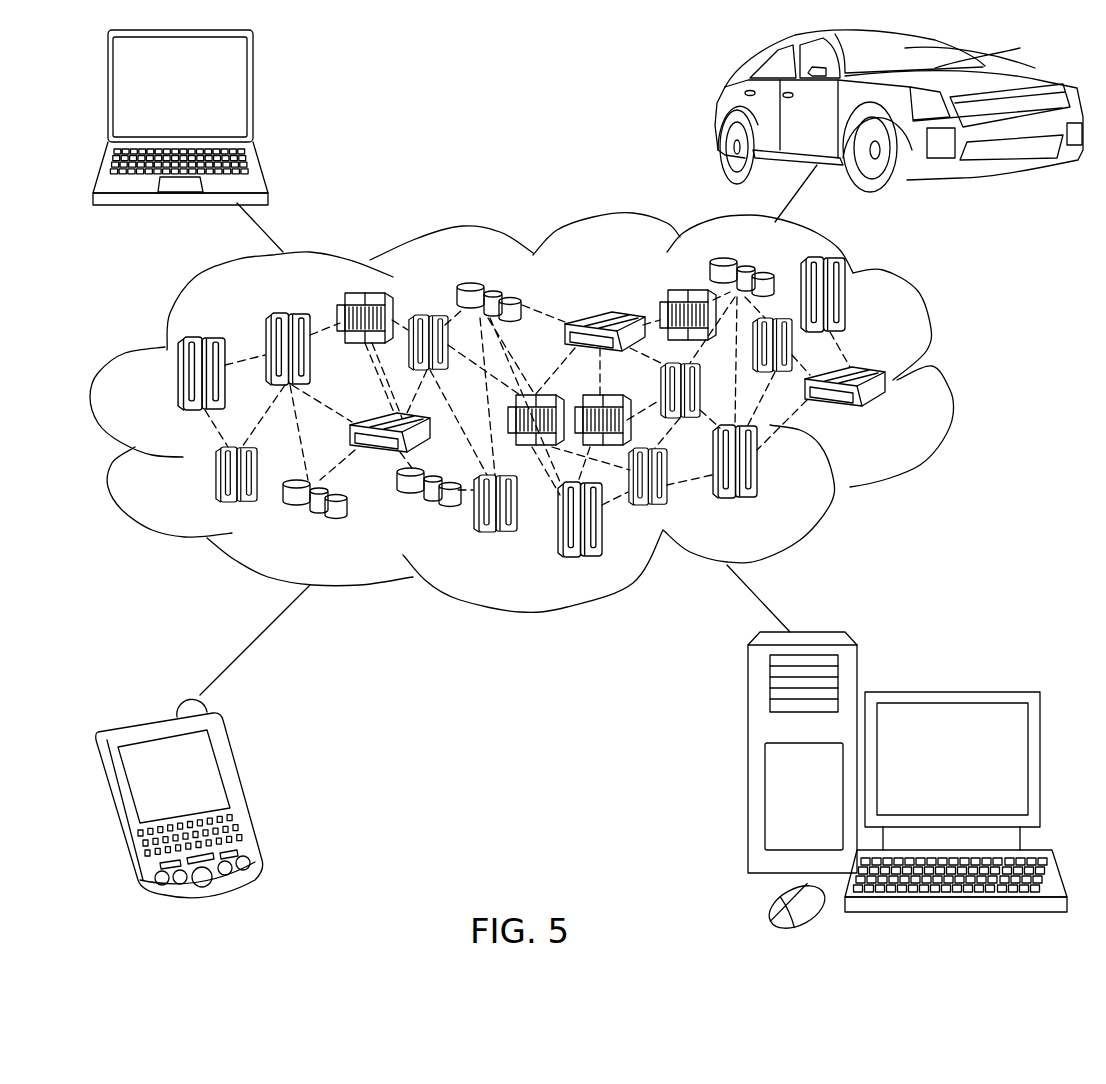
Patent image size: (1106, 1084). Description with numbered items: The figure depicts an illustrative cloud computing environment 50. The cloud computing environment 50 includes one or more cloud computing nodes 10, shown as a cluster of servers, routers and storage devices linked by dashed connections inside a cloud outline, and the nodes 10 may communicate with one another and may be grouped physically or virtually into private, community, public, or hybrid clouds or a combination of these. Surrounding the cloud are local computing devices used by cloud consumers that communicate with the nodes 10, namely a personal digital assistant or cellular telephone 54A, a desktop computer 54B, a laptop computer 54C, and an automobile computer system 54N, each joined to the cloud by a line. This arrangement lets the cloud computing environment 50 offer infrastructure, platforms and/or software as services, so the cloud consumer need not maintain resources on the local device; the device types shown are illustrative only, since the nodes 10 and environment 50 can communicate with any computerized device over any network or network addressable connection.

The cloud computing node 10 is at (886, 418).
The cloud computing environment 50 is at (550, 413).
The personal digital assistant or cellular telephone 54A is at (240, 790).
The desktop computer 54B is at (950, 690).
The laptop computer 54C is at (253, 95).
The automobile computer system 54N is at (718, 112).